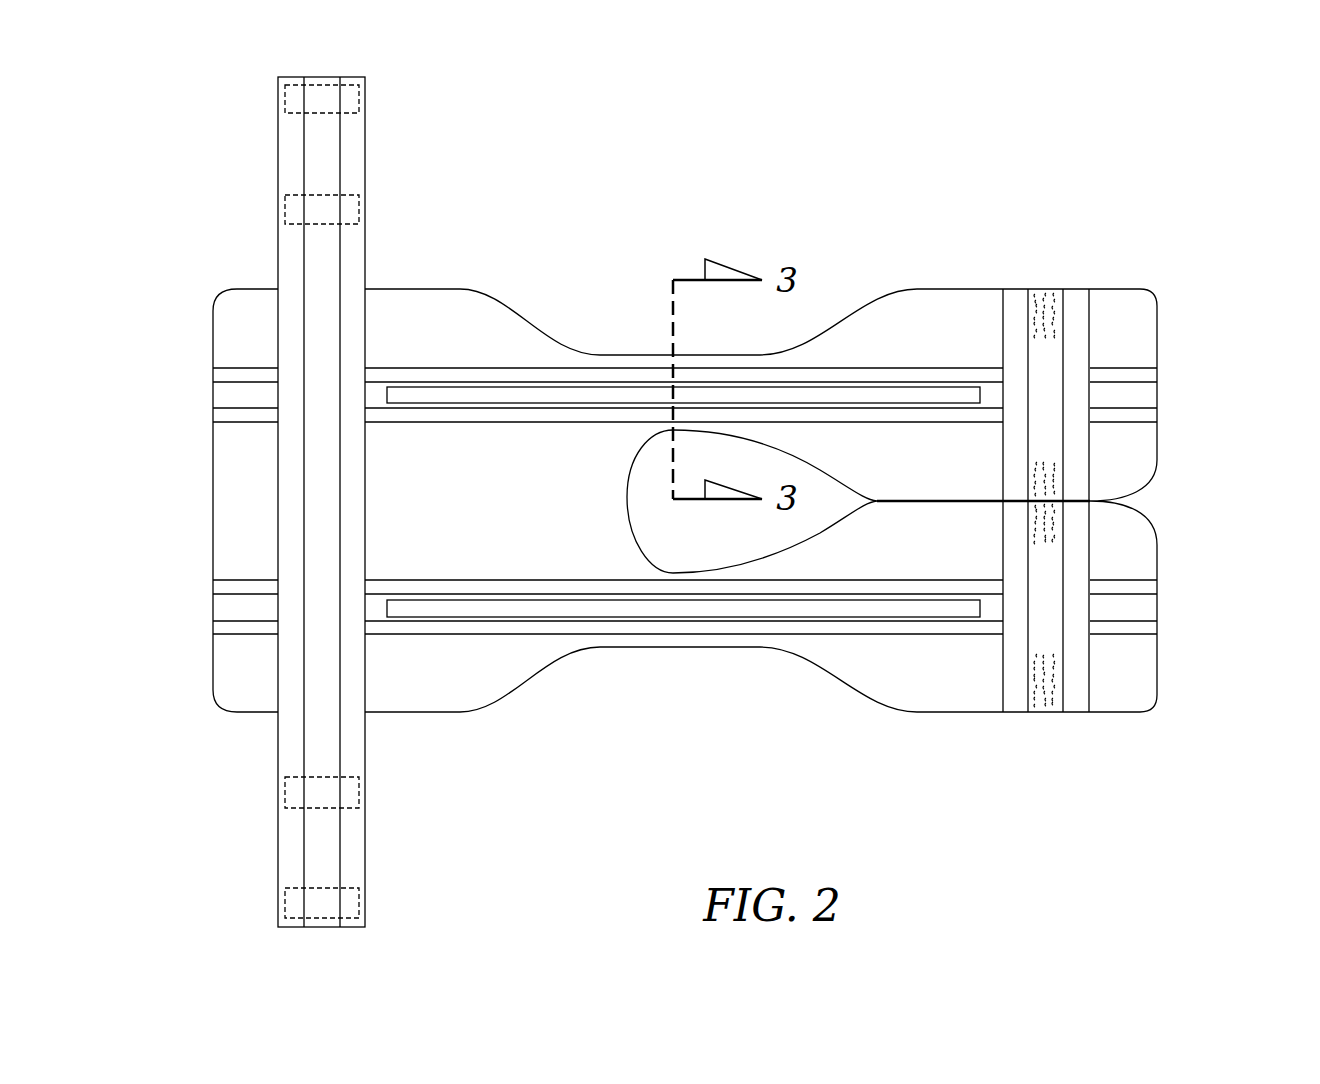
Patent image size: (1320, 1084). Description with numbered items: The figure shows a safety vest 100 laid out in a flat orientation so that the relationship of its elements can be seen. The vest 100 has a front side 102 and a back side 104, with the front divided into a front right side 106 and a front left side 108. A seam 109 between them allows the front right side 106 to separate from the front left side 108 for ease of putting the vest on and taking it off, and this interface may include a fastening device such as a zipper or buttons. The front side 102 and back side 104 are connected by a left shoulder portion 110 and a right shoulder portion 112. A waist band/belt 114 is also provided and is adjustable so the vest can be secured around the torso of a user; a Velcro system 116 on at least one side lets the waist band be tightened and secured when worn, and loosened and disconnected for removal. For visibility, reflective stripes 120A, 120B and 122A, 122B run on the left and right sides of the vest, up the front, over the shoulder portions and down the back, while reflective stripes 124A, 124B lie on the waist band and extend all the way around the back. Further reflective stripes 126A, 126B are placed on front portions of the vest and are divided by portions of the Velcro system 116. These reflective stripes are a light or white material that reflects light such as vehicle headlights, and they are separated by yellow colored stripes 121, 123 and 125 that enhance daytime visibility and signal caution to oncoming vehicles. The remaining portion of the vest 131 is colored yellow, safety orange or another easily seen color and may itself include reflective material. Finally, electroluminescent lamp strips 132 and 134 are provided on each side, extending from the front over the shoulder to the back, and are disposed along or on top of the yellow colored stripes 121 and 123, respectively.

The safety vest 100 is at (1205, 165).
The front side 102 is at (1150, 500).
The back side 104 is at (222, 541).
The front right side 106 is at (942, 686).
The front left side 108 is at (930, 320).
The seam 109 is at (958, 498).
The left shoulder portion 110 is at (685, 637).
The right shoulder portion 112 is at (706, 363).
The waist band/belt 114 is at (358, 735).
The Velcro system 116 is at (1045, 693).
The reflective stripe 120A is at (1155, 630).
The reflective stripe 120B is at (1155, 588).
The yellow colored stripe 121 is at (1115, 610).
The reflective stripe 122A is at (1155, 372).
The reflective stripe 122B is at (1155, 413).
The yellow colored stripe 123 is at (1115, 393).
The reflective stripe 124A is at (288, 840).
The reflective stripe 124B is at (357, 843).
The yellow colored stripe 125 is at (322, 494).
The reflective stripe 126A is at (1077, 295).
The reflective stripe 126B is at (1015, 295).
The remaining portion of the vest 131 is at (565, 462).
The electroluminescent lamp strip 132 is at (537, 607).
The electroluminescent lamp strip 134 is at (512, 393).